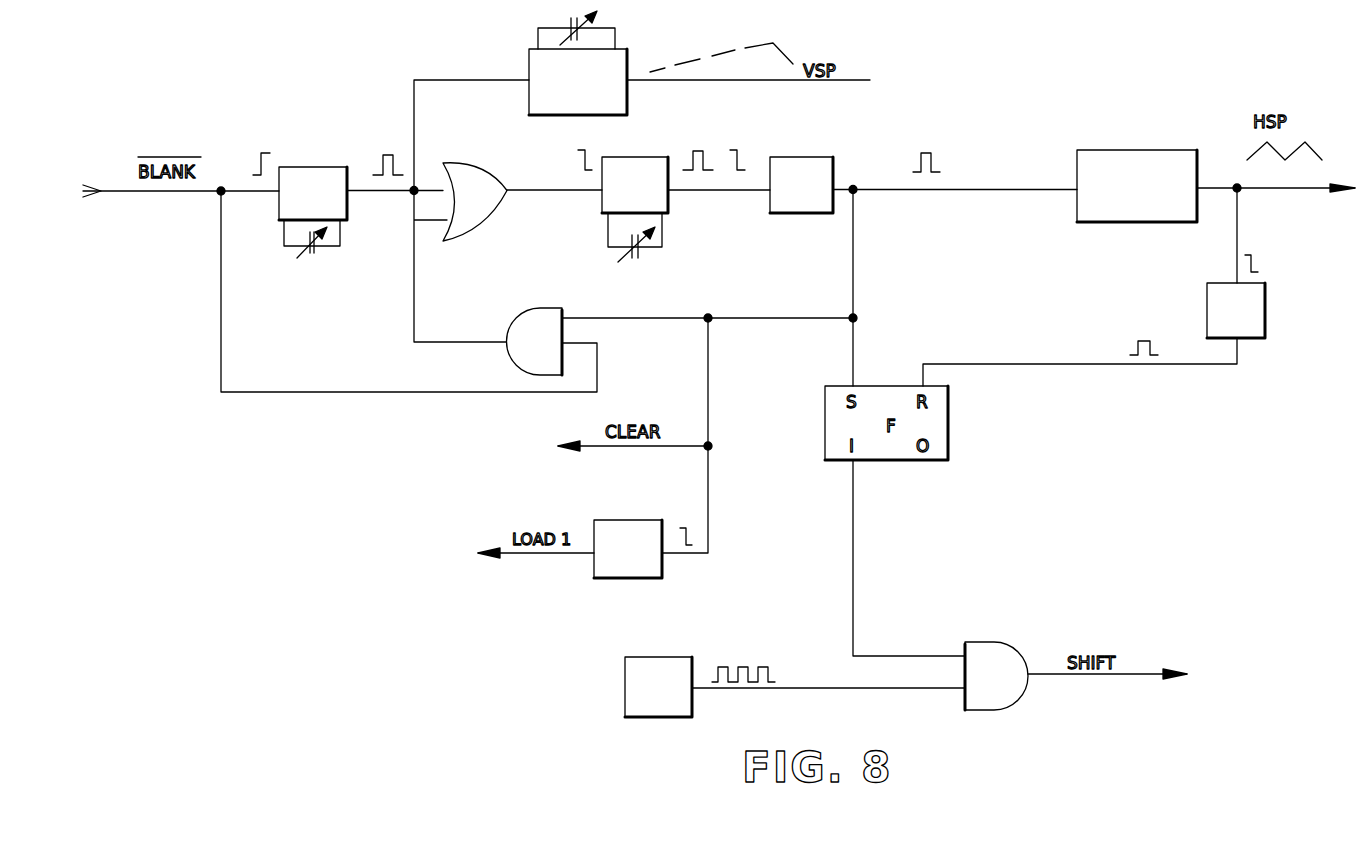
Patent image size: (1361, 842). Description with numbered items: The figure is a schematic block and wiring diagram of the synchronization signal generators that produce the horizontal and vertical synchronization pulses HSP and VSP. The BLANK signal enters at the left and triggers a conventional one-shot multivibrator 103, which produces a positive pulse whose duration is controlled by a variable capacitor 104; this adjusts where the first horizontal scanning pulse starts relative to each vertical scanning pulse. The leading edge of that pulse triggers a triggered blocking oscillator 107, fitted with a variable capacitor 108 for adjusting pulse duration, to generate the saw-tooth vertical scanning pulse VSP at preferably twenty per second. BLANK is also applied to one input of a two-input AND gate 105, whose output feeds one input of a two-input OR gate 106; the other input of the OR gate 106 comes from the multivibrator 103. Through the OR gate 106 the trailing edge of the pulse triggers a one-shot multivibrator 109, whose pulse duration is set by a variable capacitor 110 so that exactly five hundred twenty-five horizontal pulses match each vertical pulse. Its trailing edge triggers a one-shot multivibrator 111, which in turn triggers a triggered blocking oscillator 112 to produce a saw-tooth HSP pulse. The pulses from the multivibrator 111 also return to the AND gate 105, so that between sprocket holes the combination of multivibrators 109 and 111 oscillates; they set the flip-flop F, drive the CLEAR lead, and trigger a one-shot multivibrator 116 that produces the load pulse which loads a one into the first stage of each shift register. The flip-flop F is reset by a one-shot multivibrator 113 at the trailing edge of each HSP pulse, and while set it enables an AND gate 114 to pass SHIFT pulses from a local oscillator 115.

The one-shot multivibrator 103 is at (318, 167).
The variable capacitor 104 is at (320, 250).
The AND gate 105 is at (537, 313).
The OR gate 106 is at (472, 163).
The triggered blocking oscillator 107 is at (617, 103).
The variable capacitor 108 is at (617, 33).
The one-shot multivibrator 109 is at (627, 157).
The variable capacitor 110 is at (645, 253).
The one-shot multivibrator 111 is at (798, 157).
The triggered blocking oscillator 112 is at (1125, 150).
The one-shot multivibrator 113 is at (1265, 302).
The AND gate 114 is at (988, 642).
The local oscillator 115 is at (668, 657).
The one-shot multivibrator 116 is at (637, 520).